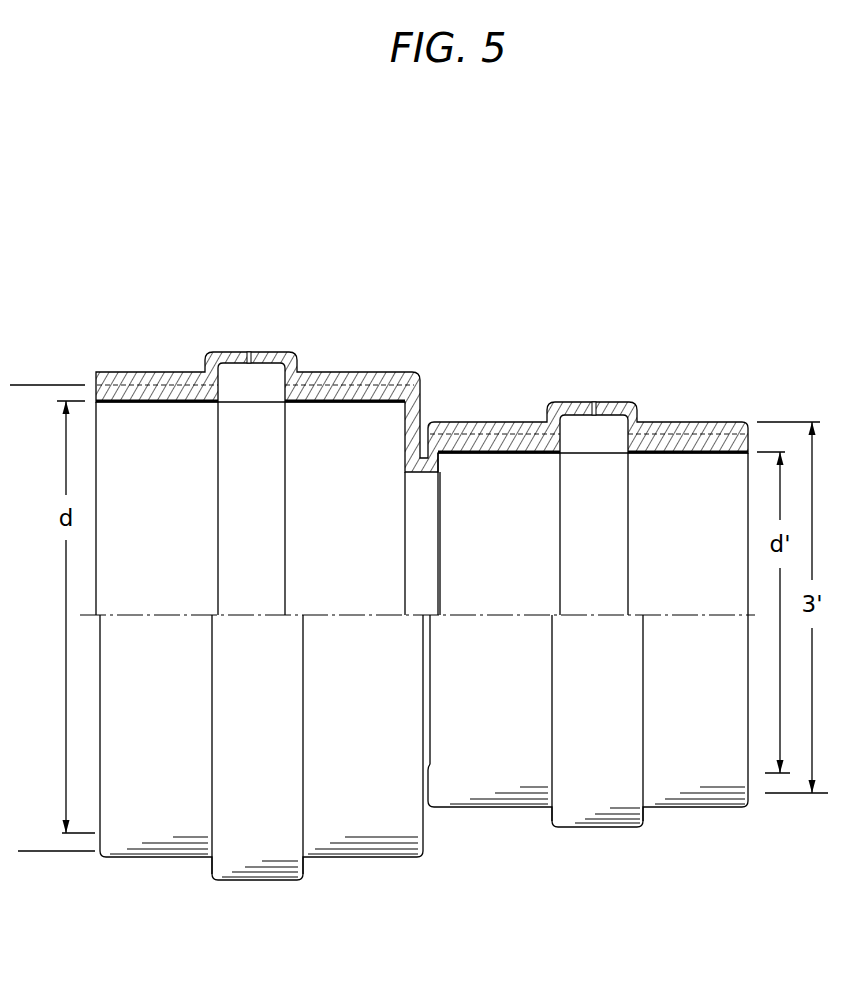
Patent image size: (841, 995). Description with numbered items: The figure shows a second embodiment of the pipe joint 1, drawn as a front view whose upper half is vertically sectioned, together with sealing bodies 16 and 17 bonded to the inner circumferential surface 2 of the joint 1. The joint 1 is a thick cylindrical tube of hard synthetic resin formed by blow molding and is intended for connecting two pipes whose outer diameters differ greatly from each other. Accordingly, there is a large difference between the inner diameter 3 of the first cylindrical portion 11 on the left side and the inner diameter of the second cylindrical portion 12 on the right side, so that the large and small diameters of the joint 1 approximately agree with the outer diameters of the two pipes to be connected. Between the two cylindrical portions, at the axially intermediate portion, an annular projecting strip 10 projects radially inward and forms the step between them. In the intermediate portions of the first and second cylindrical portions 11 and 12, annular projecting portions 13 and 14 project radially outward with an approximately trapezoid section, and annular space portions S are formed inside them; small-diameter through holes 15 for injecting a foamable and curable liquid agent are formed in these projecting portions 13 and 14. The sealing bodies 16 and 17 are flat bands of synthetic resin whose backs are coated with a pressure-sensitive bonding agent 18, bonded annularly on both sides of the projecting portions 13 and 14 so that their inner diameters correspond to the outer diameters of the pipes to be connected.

The pipe joint 1 is at (733, 405).
The inner circumferential surface 2 is at (750, 432).
The inner diameter 3 is at (31, 851).
The annular projecting strip 10 is at (425, 503).
The first cylindrical portion 11 is at (322, 372).
The second cylindrical portion 12 is at (465, 421).
The annular projecting portion 13 is at (230, 352).
The annular projecting portion 14 is at (577, 402).
The small-diameter through hole 15 is at (251, 352).
The sealing body 16 is at (122, 378).
The sealing body 17 is at (502, 423).
The pressure-sensitive bonding agent 18 is at (165, 378).
The annular space portion S is at (252, 380).